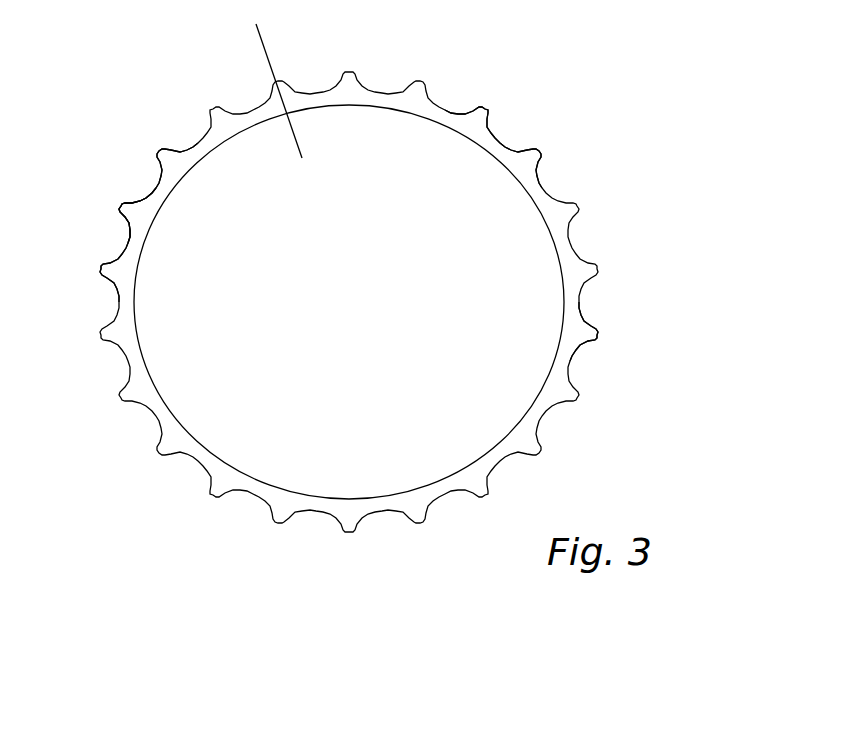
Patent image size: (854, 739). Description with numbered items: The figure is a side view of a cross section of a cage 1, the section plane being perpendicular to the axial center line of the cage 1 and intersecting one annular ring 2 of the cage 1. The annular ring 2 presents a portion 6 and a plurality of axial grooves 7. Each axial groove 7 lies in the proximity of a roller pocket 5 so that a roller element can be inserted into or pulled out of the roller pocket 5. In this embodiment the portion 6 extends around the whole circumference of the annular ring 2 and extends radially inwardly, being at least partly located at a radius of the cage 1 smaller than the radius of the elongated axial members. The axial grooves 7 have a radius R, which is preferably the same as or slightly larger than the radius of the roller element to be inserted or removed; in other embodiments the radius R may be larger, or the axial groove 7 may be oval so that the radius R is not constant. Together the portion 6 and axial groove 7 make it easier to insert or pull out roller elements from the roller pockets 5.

The cage 1 is at (262, 32).
The annular ring 2 is at (600, 335).
The roller pocket 5 is at (508, 137).
The portion 6 is at (177, 173).
The axial groove 7 is at (147, 191).
The radius R is at (108, 248).